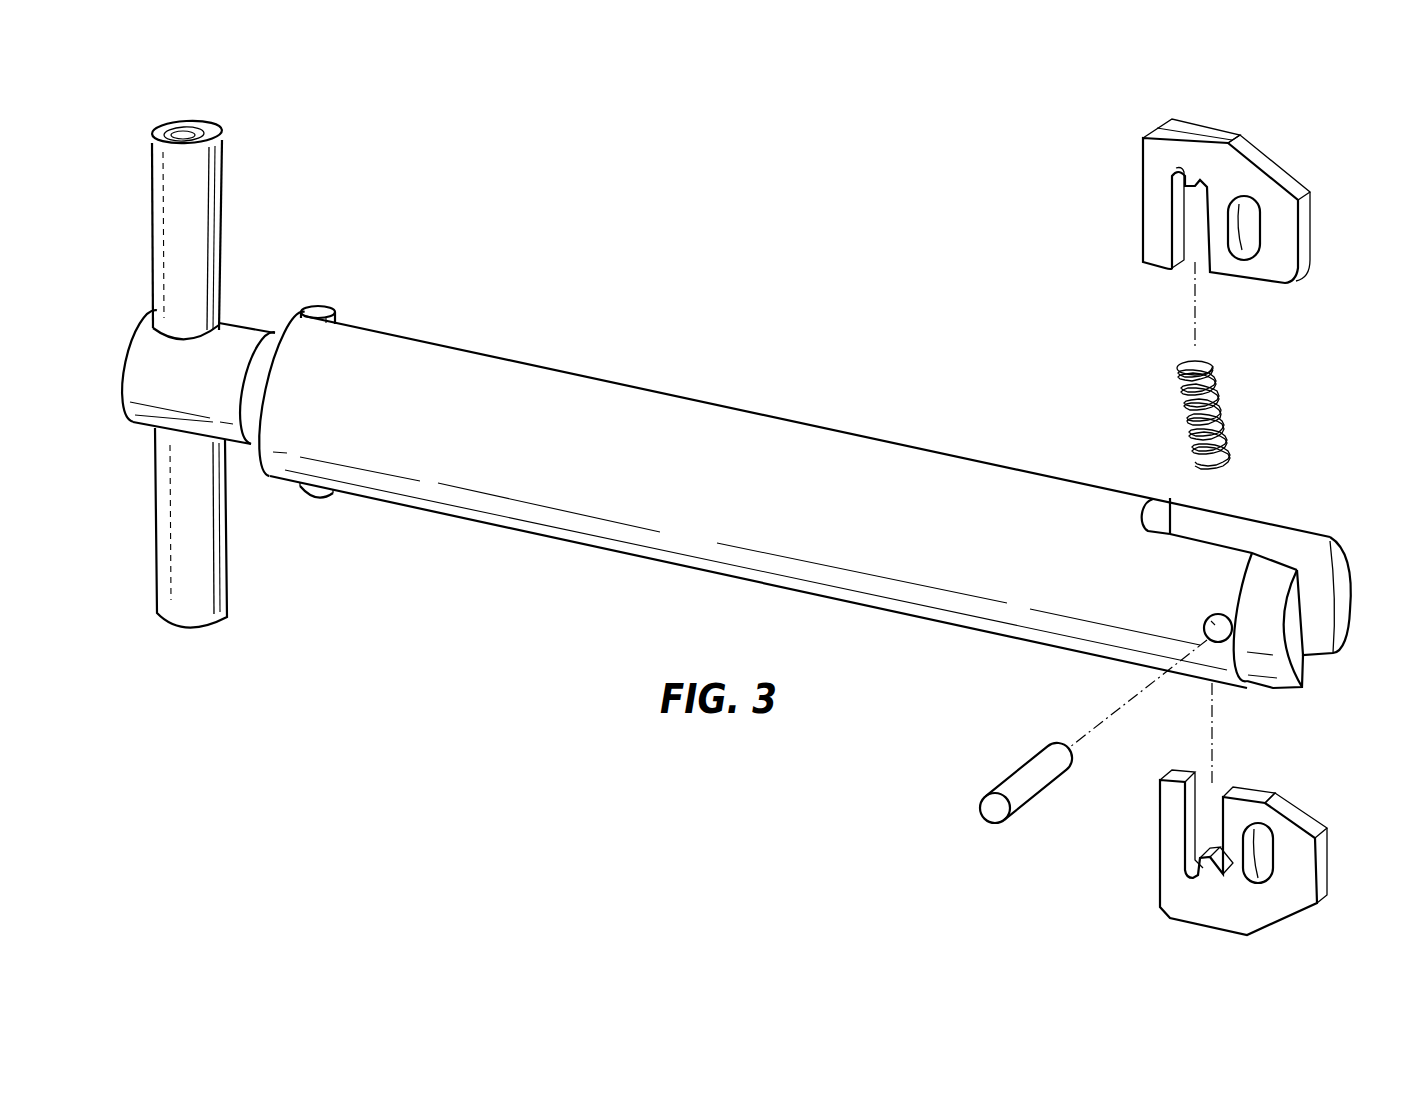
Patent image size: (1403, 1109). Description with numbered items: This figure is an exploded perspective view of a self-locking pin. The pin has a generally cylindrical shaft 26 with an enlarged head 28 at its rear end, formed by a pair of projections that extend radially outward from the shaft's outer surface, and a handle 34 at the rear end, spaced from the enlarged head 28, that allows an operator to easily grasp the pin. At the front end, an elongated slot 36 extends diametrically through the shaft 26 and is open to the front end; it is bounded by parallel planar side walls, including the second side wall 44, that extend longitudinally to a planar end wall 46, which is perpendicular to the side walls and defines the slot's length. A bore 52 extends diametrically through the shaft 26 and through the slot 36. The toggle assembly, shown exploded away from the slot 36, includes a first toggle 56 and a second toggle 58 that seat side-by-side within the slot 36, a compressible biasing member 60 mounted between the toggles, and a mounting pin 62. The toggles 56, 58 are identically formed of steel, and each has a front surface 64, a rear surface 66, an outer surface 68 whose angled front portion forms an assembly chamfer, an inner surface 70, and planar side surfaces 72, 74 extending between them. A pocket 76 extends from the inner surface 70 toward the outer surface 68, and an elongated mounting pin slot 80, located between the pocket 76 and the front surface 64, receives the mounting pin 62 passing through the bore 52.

The shaft 26 is at (590, 402).
The enlarged head 28 is at (310, 500).
The handle 34 is at (197, 243).
The elongated slot 36 is at (1235, 538).
The second planar side wall 44 is at (1300, 545).
The end wall 46 is at (1158, 500).
The bore 52 is at (1203, 620).
The first toggle 56 is at (1169, 915).
The second toggle 58 is at (1154, 126).
The compressible biasing member 60 is at (1173, 398).
The mounting pin 62 is at (1010, 782).
The front surface 64 is at (1307, 227).
The rear surface 66 is at (1142, 200).
The outer surface 68 is at (1193, 128).
The inner surface 70 is at (1245, 284).
The first planar side surface 72 is at (1260, 192).
The second planar side surface 74 is at (1287, 167).
The pocket 76 is at (1195, 232).
The mounting pin slot 80 is at (1252, 236).